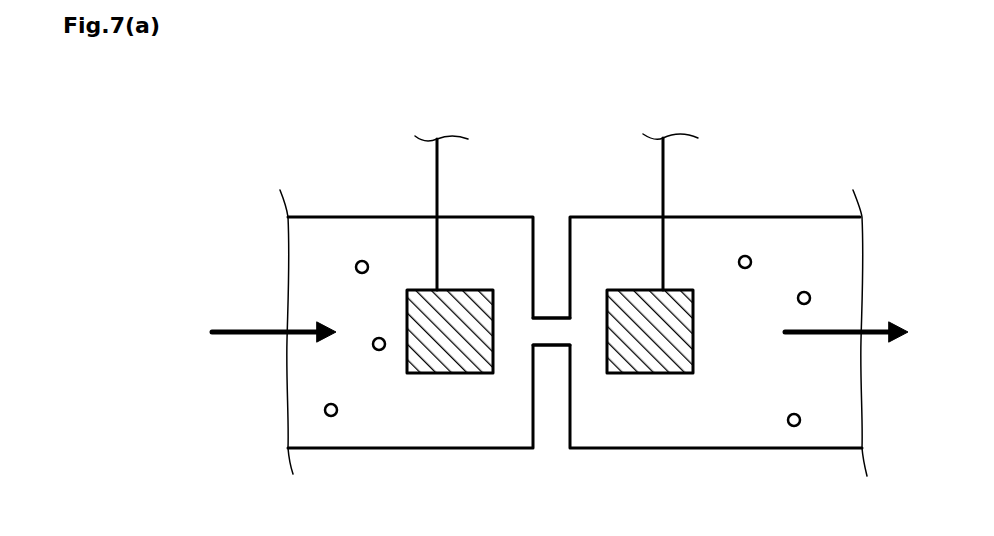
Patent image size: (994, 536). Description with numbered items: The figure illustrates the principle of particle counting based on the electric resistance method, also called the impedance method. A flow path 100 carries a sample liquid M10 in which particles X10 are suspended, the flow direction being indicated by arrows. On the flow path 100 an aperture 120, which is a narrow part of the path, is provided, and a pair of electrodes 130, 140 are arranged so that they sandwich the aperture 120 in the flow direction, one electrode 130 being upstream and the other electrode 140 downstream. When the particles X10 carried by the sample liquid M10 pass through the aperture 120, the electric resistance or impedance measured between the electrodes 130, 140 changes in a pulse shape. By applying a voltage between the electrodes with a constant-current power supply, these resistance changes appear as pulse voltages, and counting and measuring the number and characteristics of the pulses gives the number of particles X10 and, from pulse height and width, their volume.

The flow path 100 is at (512, 232).
The aperture 120 is at (543, 333).
The electrode 130 is at (435, 373).
The electrode 140 is at (657, 373).
The particles X10 is at (362, 260).
The sample liquid M10 is at (315, 250).